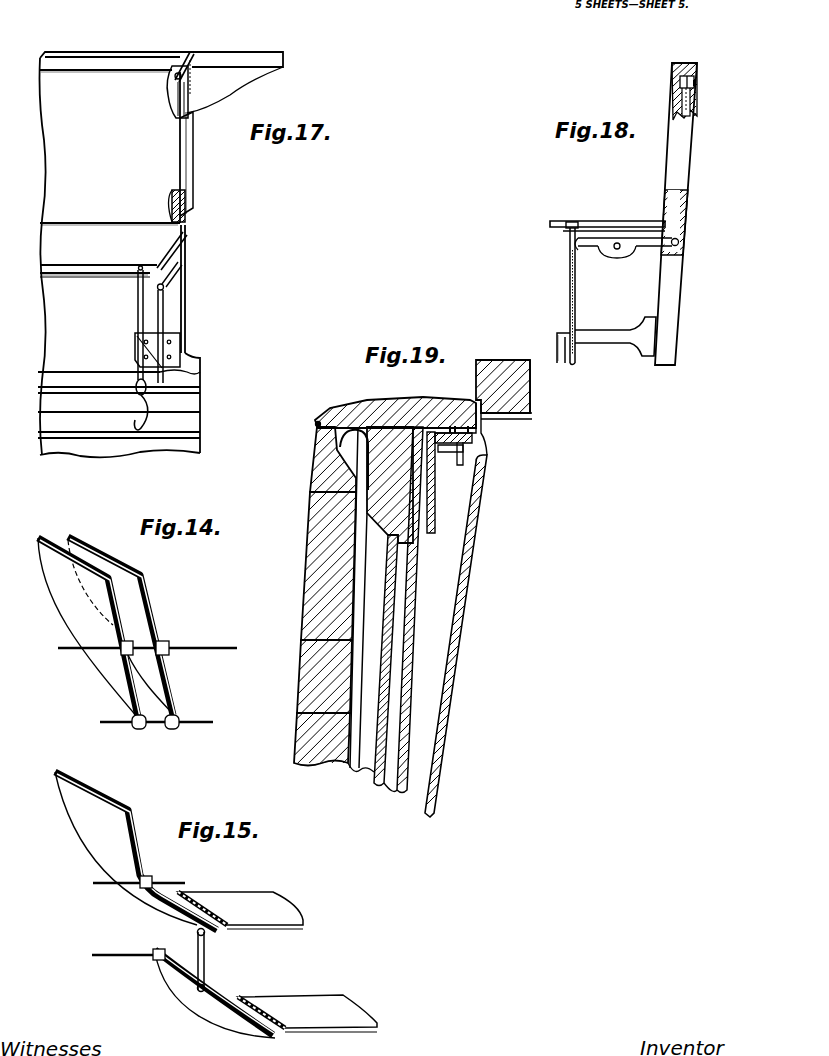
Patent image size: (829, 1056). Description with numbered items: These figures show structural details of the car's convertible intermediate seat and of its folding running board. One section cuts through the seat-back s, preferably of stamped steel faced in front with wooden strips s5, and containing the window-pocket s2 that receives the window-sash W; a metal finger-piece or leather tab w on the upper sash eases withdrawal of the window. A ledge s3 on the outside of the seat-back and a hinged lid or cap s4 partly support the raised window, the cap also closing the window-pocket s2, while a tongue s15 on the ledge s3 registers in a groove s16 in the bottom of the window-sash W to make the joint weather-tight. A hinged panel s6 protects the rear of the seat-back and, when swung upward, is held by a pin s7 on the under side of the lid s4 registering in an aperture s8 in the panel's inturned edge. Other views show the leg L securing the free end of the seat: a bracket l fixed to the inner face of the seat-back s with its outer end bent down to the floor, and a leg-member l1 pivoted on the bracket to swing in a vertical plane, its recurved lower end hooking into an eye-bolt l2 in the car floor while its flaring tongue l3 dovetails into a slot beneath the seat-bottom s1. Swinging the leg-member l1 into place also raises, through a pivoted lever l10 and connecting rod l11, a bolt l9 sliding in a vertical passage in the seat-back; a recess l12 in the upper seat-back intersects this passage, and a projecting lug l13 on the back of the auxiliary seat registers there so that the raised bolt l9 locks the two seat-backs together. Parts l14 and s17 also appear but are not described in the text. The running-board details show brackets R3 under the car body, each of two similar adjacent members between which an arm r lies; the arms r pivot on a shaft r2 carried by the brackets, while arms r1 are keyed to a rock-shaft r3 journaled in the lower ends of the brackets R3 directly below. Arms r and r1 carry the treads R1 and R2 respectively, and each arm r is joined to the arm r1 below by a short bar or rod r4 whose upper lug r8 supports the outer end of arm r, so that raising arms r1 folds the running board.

In FIG. 17, the seat-back s is at (105, 201).
In FIG. 18, the seat-back s is at (670, 148).
In FIG. 17, the seat-bottom s1 is at (109, 238).
In FIG. 18, the seat-bottom s1 is at (622, 226).
In FIG. 17, the leg L is at (94, 315).
In FIG. 18, the leg L is at (548, 329).
In FIG. 18, the bracket l is at (612, 336).
In FIG. 17, the leg-member l1 is at (137, 305).
In FIG. 18, the leg-member l1 is at (577, 284).
In FIG. 17, the eye-bolt l2 is at (150, 418).
In FIG. 18, the flaring tongue l3 is at (566, 232).
In FIG. 17, the rod or bolt l9 is at (185, 208).
In FIG. 18, the rod or bolt l9 is at (677, 100).
In FIG. 17, the pivoted lever l10 is at (170, 283).
In FIG. 18, the pivoted lever l10 is at (640, 250).
In FIG. 17, the connecting rod l11 is at (166, 316).
In FIG. 18, the connecting rod l11 is at (569, 284).
In FIG. 18, the recess l12 is at (697, 80).
In FIG. 17, the projecting lug l13 is at (172, 80).
In FIG. 18, the projecting lug l13 is at (698, 88).
In FIG. 17, the hinge pin l14 is at (175, 68).
In FIG. 19, the window-pocket s2 is at (411, 700).
In FIG. 19, the ledge s3 is at (507, 420).
In FIG. 19, the lid or cap s4 is at (413, 400).
In FIG. 19, the wooden strips s5 is at (310, 542).
In FIG. 19, the panel s6 is at (468, 562).
In FIG. 19, the pin s7 is at (468, 447).
In FIG. 19, the aperture s8 is at (465, 463).
In FIG. 19, the tongue s15 is at (515, 416).
In FIG. 19, the groove s16 is at (528, 392).
In FIG. 17, the strut s17 is at (186, 239).
In FIG. 19, the finger-piece or leather tab w is at (506, 362).
In FIG. 19, the window-sash W is at (392, 652).
In FIG. 15, the tread R1 is at (240, 910).
In FIG. 15, the tread R2 is at (307, 1013).
In FIG. 14, the brackets R3 is at (116, 627).
In FIG. 15, the arms r is at (137, 851).
In FIG. 15, the arms r1 is at (198, 996).
In FIG. 14, the shaft r2 is at (226, 648).
In FIG. 15, the shaft r2 is at (173, 880).
In FIG. 14, the rock-shaft r3 is at (200, 720).
In FIG. 15, the rock-shaft r3 is at (118, 953).
In FIG. 15, the bar or rod r4 is at (205, 962).
In FIG. 15, the lug r8 is at (208, 938).